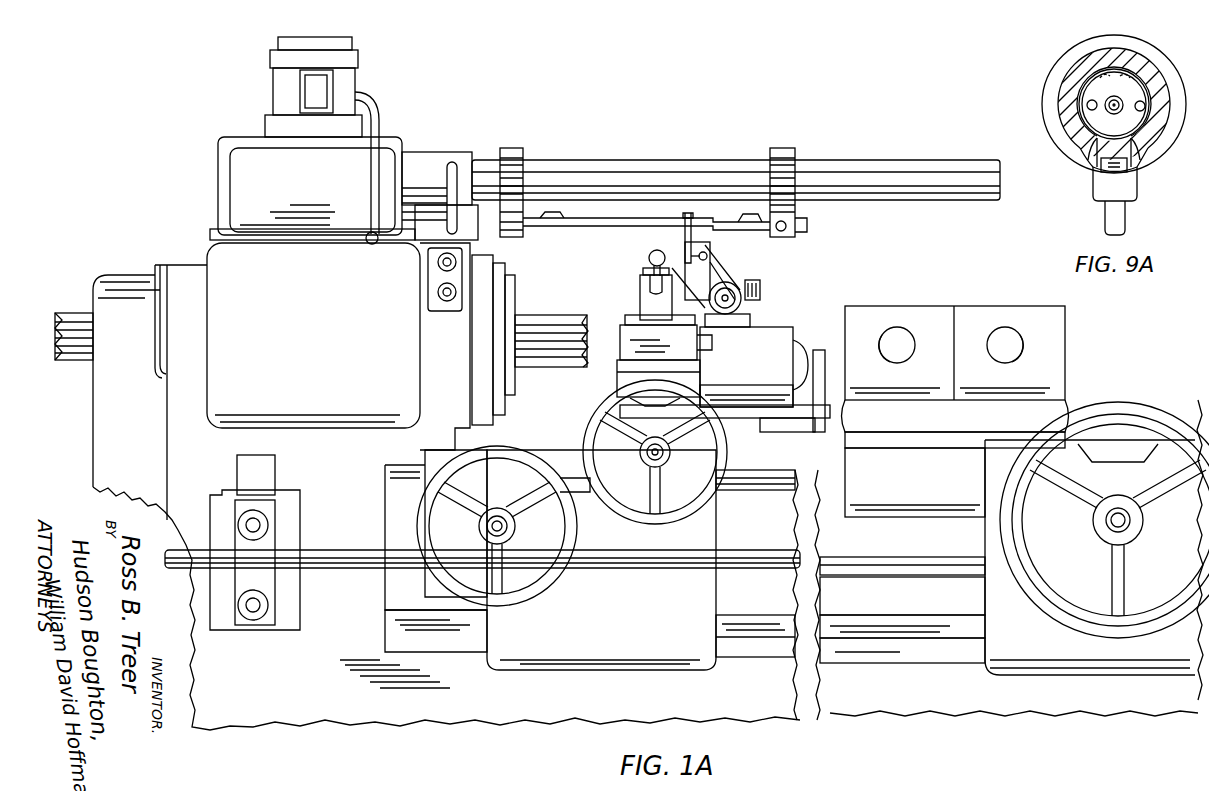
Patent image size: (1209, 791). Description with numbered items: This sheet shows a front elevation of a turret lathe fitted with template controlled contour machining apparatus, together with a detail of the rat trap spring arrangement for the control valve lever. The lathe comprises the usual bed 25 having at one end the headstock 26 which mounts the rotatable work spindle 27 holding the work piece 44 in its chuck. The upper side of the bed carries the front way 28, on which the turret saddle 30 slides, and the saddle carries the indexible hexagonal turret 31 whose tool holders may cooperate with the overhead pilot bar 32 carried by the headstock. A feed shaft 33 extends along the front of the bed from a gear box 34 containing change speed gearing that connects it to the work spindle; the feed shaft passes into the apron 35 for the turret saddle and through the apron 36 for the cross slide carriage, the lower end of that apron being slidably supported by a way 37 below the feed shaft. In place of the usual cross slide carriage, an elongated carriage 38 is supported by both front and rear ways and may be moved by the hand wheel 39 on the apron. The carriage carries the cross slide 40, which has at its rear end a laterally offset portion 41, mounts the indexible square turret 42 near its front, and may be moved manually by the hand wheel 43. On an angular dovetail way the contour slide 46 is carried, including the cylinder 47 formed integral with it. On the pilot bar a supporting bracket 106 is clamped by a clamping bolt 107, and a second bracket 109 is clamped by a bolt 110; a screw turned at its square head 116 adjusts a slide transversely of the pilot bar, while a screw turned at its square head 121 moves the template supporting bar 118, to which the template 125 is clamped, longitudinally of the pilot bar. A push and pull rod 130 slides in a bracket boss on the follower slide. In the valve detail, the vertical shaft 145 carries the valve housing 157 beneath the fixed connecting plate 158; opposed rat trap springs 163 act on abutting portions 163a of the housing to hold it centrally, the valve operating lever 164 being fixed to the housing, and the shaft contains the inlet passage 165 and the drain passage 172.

In FIG. 1A, the bed 25 is at (922, 600).
In FIG. 1A, the headstock 26 is at (358, 444).
In FIG. 1A, the work spindle 27 is at (515, 302).
In FIG. 1A, the front way 28 is at (782, 490).
In FIG. 1A, the turret saddle 30 is at (964, 467).
In FIG. 1A, the indexible hexagonal turret 31 is at (1062, 372).
In FIG. 1A, the pilot bar 32 is at (905, 168).
In FIG. 1A, the feed shaft 33 is at (752, 572).
In FIG. 1A, the gear box 34 is at (144, 457).
In FIG. 1A, the apron 35 is at (1052, 636).
In FIG. 1A, the apron 36 is at (628, 605).
In FIG. 1A, the way 37 is at (740, 630).
In FIG. 1A, the elongated carriage 38 is at (582, 492).
In FIG. 1A, the hand wheel 39 is at (510, 605).
In FIG. 1A, the cross slide 40 is at (615, 383).
In FIG. 1A, the laterally offset portion 41 is at (752, 418).
In FIG. 1A, the indexible square turret 42 is at (630, 338).
In FIG. 1A, the hand wheel 43 is at (680, 515).
In FIG. 1A, the work piece 44 is at (572, 309).
In FIG. 1A, the contour slide 46 is at (736, 396).
In FIG. 1A, the cylinder 47 is at (765, 332).
In FIG. 1A, the supporting strap or bracket 106 is at (522, 160).
In FIG. 1A, the clamping bolt 107 is at (522, 182).
In FIG. 1A, the second bracket 109 is at (788, 160).
In FIG. 1A, the bolt 110 is at (790, 175).
In FIG. 1A, the square head 116 is at (798, 236).
In FIG. 1A, the template or pattern supporting bar 118 is at (560, 232).
In FIG. 1A, the square head 121 is at (797, 226).
In FIG. 1A, the template or pattern 125 is at (625, 226).
In FIG. 1A, the push and pull rod 130 is at (683, 252).
In FIG. 1A, the valve operating lever 164 is at (648, 258).
In FIG. 9A, the valve operating lever 164 is at (1120, 220).
In FIG. 9A, the shaft 145 is at (1116, 80).
In FIG. 9A, the valve housing 157 is at (1160, 55).
In FIG. 9A, the connecting plate 158 is at (1080, 66).
In FIG. 9A, the rat trap springs 163 is at (1152, 78).
In FIG. 9A, the abutting portions 163a is at (1082, 152).
In FIG. 9A, the passage 165 is at (1143, 110).
In FIG. 9A, the outlet or drain passage 172 is at (1090, 104).